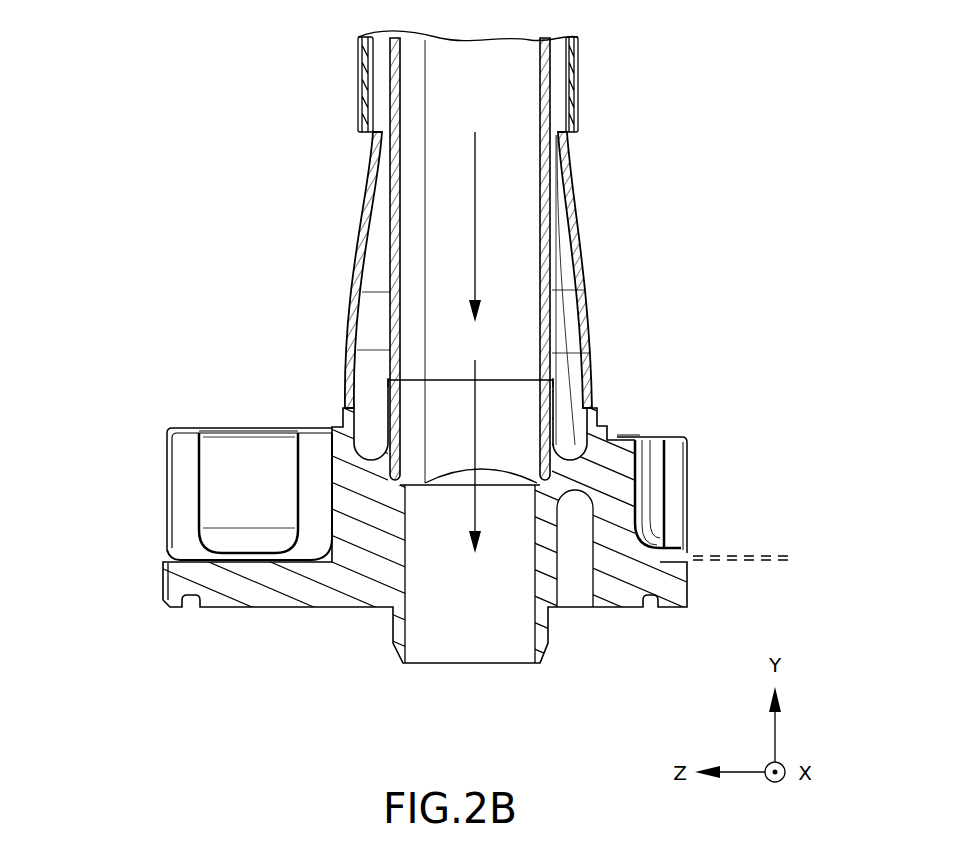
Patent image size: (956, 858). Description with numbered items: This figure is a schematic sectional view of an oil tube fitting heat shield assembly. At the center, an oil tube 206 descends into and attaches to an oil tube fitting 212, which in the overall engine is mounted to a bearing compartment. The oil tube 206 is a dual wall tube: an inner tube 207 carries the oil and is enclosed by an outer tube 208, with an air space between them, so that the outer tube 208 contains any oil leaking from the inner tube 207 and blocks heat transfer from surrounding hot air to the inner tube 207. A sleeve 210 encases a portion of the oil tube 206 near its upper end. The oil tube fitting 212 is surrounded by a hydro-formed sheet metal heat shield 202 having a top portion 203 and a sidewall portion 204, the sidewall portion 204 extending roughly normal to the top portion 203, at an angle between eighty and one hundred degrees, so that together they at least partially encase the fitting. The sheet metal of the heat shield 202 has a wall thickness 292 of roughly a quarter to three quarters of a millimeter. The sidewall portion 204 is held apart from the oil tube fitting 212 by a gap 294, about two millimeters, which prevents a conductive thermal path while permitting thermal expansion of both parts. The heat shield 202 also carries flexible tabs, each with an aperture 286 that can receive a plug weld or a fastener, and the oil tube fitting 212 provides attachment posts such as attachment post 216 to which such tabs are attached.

The oil tube fitting heat shield 202 is at (205, 428).
The top portion 203 is at (238, 418).
The sidewall portion 204 is at (150, 503).
The oil tube 206 is at (516, 241).
The inner tube 207 is at (546, 143).
The outer tube 208 is at (573, 206).
The sleeve 210 is at (362, 62).
The oil tube fitting 212 is at (353, 582).
The attachment post 216 is at (257, 455).
The aperture 286 is at (643, 434).
The wall thickness 292 is at (180, 455).
The gap 294 is at (765, 515).